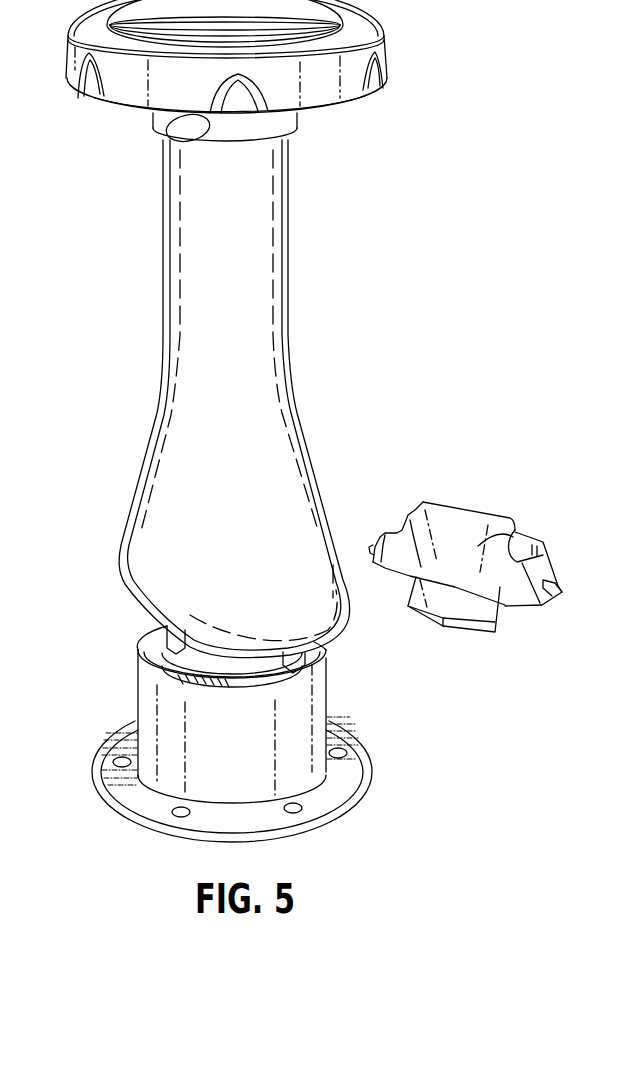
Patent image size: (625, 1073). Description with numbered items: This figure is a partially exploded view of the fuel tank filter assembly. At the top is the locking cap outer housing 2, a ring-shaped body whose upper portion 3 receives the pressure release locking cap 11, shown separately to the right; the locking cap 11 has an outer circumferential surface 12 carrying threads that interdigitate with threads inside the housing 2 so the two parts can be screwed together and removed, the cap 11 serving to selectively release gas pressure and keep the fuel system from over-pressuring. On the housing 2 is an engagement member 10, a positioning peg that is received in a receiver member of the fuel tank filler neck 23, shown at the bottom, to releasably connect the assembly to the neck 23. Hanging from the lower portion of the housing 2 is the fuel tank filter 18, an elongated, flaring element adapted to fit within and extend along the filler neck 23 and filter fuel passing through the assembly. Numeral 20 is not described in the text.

The locking cap outer housing 2 is at (64, 70).
The upper portion 3 is at (624, 136).
The engagement member 10 is at (166, 133).
The pressure release locking cap 11 is at (488, 489).
The outer circumferential surface 12 is at (513, 528).
The fuel tank filter 18 is at (286, 314).
The housing 20 is at (614, 713).
The fuel tank filler neck 23 is at (147, 697).